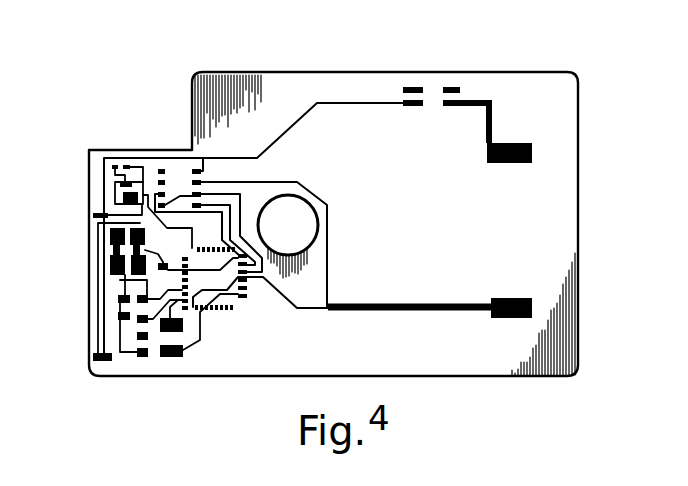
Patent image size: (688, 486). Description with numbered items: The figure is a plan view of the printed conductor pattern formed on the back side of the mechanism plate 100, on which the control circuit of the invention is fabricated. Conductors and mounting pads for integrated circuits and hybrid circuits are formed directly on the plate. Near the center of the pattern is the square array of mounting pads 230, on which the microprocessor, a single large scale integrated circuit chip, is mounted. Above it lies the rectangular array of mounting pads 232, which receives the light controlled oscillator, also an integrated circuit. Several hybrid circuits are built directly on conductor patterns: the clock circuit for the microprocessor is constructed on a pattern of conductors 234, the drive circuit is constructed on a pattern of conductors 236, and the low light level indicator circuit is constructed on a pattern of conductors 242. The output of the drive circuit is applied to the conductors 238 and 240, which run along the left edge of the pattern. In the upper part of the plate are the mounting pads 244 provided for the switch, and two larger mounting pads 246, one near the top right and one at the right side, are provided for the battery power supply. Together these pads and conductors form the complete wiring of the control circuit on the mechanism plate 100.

The mechanism plate 100 is at (566, 224).
The square array of mounting pads 230 is at (222, 306).
The rectangular array of mounting pads 232 is at (176, 176).
The pattern of conductors 234 is at (145, 360).
The pattern of conductors 236 is at (108, 252).
The conductor 238 is at (92, 215).
The conductor 240 is at (93, 356).
The pattern of conductors 242 is at (112, 187).
The mounting pads 244 is at (447, 85).
The mounting pads 246 is at (508, 298).